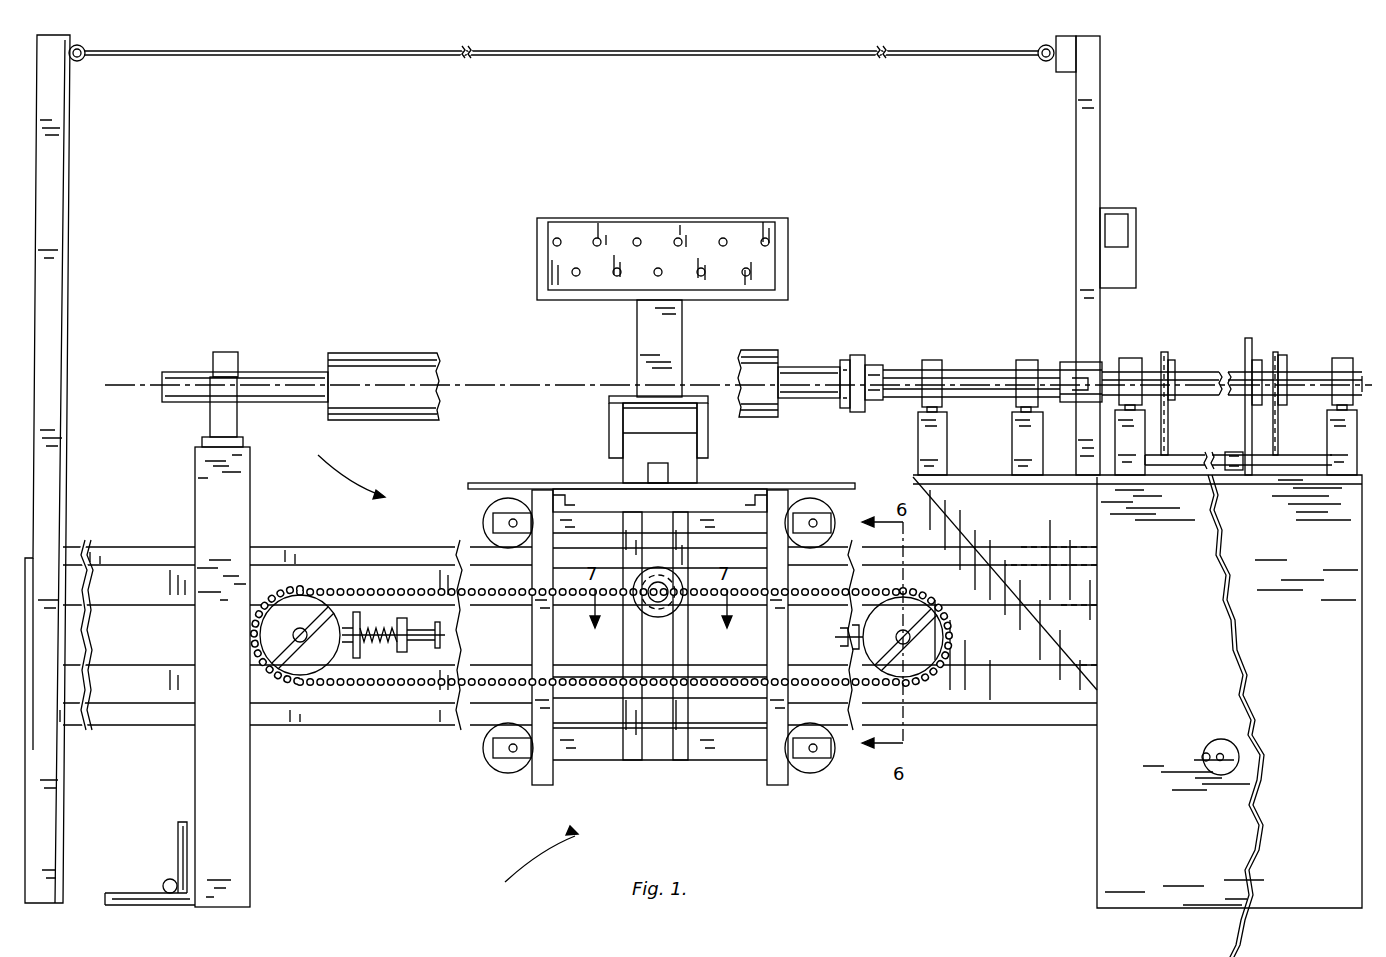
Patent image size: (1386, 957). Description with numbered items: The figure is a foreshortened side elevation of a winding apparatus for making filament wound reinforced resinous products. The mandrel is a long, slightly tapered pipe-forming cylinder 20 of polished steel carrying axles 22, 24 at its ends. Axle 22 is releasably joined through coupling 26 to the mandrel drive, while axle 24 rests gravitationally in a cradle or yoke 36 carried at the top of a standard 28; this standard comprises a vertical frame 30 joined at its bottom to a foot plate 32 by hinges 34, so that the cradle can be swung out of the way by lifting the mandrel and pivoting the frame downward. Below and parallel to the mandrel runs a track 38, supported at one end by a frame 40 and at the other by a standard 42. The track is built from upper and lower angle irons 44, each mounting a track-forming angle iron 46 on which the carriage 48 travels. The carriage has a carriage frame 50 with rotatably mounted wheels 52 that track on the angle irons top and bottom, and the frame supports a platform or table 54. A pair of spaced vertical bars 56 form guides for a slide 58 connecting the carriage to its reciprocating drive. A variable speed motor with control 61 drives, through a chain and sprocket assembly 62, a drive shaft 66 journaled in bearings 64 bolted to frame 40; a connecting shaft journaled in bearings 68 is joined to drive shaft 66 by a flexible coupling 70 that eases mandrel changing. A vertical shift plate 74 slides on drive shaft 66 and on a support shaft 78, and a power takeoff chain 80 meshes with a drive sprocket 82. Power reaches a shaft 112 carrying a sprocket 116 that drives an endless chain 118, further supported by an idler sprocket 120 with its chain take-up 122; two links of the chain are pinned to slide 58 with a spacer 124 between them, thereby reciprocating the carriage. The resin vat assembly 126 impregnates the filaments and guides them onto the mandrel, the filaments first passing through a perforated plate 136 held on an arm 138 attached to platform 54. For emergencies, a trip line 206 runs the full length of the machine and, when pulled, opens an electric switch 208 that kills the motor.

The pipe-forming cylinder 20 is at (403, 367).
The axle 22 is at (812, 367).
The axle 24 is at (282, 372).
The coupling 26 is at (856, 355).
The standard 28 is at (272, 795).
The vertical frame 30 is at (205, 484).
The foot plate 32 is at (110, 900).
The hinges 34 is at (178, 876).
The cradle or yoke 36 is at (225, 352).
The track 38 is at (338, 465).
The frame 40 is at (1100, 812).
The standard 42 is at (57, 180).
The angle irons 44 is at (156, 668).
The track-forming angle iron 46 is at (128, 550).
The carriage 48 is at (524, 861).
The carriage frame 50 is at (538, 628).
The wheels 52 is at (497, 504).
The platform or table 54 is at (595, 483).
The vertical bars 56 is at (684, 642).
The slide 58 is at (672, 612).
The control 61 is at (1226, 775).
The chain and sprocket assembly 62 is at (1168, 436).
The bearings 64 is at (1131, 358).
The drive shaft 66 is at (1238, 372).
The bearings 68 is at (1016, 362).
The flexible coupling 70 is at (1066, 364).
The vertical shift plate 74 is at (1249, 338).
The support shaft 78 is at (1188, 455).
The power takeoff chain 80 is at (1278, 436).
The drive sprocket 82 is at (1287, 362).
The shaft 112 is at (898, 642).
The sprocket 116 is at (944, 628).
The endless chain 118 is at (440, 590).
The idler sprocket 120 is at (302, 600).
The chain take-up 122 is at (395, 612).
The spacer 124 is at (652, 600).
The resin vat assembly 126 is at (730, 440).
The perforated plate 136 is at (666, 222).
The arm 138 is at (646, 340).
The trip line 206 is at (716, 60).
The electric switch 208 is at (1065, 72).